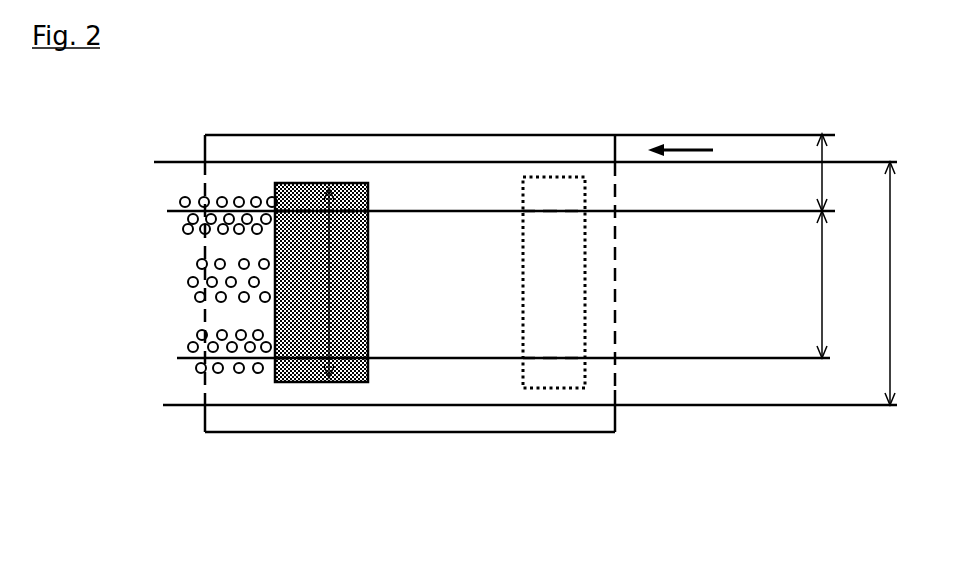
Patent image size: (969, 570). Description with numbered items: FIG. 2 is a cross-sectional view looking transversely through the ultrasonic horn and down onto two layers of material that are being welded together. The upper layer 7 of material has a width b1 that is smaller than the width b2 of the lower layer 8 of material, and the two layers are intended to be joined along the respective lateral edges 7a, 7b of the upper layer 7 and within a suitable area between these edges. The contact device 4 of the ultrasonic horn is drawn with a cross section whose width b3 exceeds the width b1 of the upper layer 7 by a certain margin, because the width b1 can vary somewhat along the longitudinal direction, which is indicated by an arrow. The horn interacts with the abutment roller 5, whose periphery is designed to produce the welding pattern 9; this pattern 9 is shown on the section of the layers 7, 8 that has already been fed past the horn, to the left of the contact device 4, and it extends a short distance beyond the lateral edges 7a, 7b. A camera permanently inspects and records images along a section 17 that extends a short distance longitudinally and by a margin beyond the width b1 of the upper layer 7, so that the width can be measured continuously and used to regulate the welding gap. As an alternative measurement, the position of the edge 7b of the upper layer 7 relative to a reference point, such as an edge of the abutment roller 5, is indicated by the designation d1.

The contact device 4 is at (297, 198).
The abutment roller 5 is at (435, 147).
The upper layer of material 7 is at (501, 296).
The lateral edge of upper layer 7a is at (552, 359).
The lateral edge of upper layer 7b is at (493, 209).
The lower layer of material 8 is at (490, 392).
The welding pattern 9 is at (187, 237).
The section 17 is at (573, 187).
The width of upper layer b1 is at (805, 284).
The width of lower layer b2 is at (873, 283).
The width of contact device b3 is at (328, 345).
The edge position measurement d1 is at (822, 180).